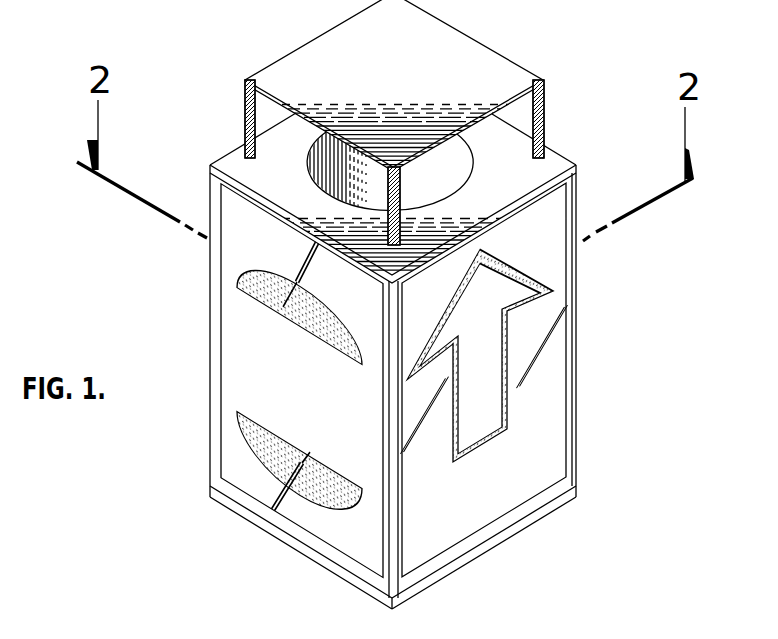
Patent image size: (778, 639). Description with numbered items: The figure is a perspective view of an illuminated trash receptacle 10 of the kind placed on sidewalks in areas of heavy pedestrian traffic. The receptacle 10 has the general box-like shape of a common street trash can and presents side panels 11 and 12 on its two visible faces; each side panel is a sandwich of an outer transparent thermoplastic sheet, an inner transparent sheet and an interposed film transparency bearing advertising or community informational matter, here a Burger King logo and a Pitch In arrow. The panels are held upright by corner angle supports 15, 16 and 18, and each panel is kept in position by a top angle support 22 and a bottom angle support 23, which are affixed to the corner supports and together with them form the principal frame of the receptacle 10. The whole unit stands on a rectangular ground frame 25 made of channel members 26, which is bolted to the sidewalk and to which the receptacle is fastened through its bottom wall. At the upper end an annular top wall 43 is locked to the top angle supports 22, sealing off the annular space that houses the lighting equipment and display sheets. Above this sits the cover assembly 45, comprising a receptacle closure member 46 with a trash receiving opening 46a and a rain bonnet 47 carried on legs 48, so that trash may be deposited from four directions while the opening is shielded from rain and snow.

The trash receptacle 10 is at (568, 107).
The side panel 11 is at (255, 258).
The side panel 12 is at (537, 402).
The corner angle support 15 is at (382, 540).
The corner angle support 16 is at (572, 322).
The corner angle support 18 is at (208, 250).
The top angle support 22 is at (242, 205).
The bottom angle support 23 is at (257, 507).
The ground frame 25 is at (473, 558).
The channel member 26 is at (310, 553).
The annular top wall 43 is at (230, 173).
The cover assembly 45 is at (240, 102).
The receptacle closure member 46 is at (548, 157).
The trash receiving opening 46a is at (460, 146).
The rain bonnet 47 is at (483, 68).
The leg 48 is at (245, 120).